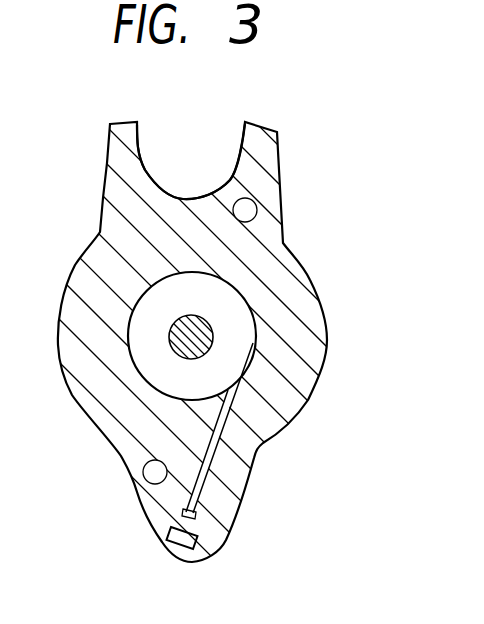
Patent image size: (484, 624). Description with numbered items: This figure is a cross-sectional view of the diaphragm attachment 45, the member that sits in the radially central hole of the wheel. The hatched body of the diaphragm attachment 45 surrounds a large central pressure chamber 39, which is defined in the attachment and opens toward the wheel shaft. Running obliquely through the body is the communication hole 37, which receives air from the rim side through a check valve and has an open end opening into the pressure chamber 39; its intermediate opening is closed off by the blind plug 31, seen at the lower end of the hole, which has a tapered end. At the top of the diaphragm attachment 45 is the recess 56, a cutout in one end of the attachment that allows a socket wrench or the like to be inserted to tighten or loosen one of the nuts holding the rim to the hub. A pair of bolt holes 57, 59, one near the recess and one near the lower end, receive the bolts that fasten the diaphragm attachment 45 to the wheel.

The blind plug 31 is at (180, 550).
The communication hole 37 is at (247, 490).
The pressure chamber 39 is at (213, 290).
The diaphragm attachment 45 is at (173, 345).
The recess 56 is at (233, 178).
The bolt hole 57 is at (247, 207).
The bolt hole 59 is at (150, 472).